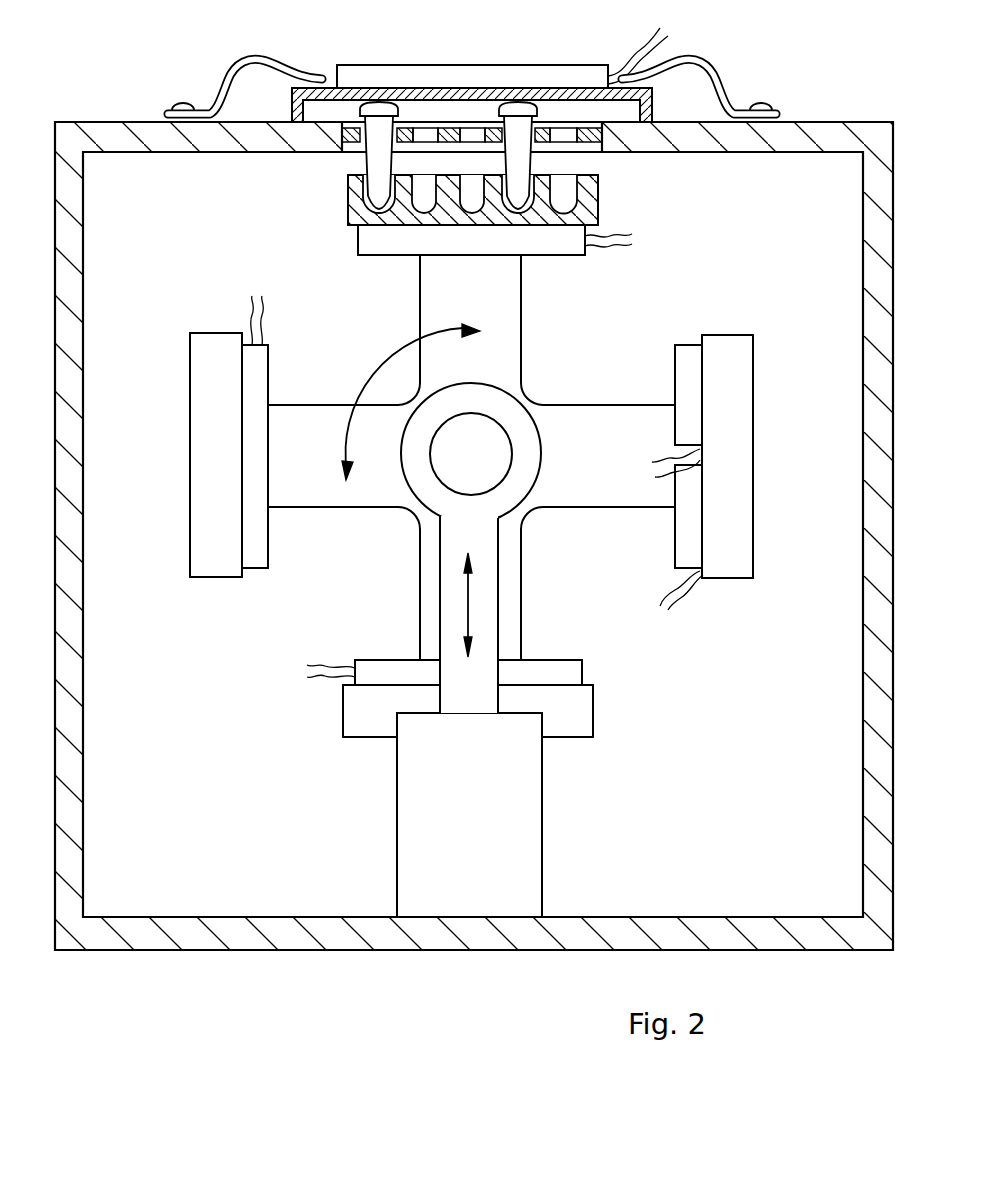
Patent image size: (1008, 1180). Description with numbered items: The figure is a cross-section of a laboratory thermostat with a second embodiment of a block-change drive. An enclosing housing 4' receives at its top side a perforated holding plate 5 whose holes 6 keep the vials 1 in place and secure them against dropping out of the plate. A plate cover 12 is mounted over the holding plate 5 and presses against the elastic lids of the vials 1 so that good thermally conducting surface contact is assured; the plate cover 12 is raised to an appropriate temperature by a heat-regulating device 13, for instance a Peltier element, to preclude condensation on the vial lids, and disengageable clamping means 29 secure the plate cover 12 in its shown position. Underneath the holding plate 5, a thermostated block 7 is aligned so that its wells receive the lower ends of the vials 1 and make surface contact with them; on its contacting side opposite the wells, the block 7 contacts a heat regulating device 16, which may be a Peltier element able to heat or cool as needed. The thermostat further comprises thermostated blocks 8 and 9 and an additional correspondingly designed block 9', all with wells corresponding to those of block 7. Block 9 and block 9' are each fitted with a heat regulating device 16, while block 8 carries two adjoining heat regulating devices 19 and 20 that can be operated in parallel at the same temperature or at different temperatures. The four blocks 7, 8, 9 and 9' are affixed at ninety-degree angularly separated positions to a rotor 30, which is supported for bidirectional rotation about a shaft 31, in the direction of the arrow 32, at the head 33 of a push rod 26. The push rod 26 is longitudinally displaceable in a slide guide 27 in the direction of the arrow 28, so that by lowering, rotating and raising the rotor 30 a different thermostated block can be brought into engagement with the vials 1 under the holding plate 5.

The vials 1 is at (373, 162).
The housing 4' is at (474, 536).
The holding plate 5 is at (445, 128).
The holes 6 is at (562, 127).
The thermostated block 7 is at (585, 207).
The thermostated block 8 is at (722, 350).
The thermostated block 9 is at (507, 711).
The thermostated block 9' is at (257, 470).
The plate cover 12 is at (498, 86).
The heat-regulating device 13 is at (383, 73).
The heat regulating device 16 is at (380, 240).
The heat regulating device 19 is at (677, 372).
The heat regulating device 20 is at (688, 536).
The push rod 26 is at (483, 632).
The slide guide 27 is at (525, 808).
The arrow 28 is at (468, 593).
The clamping means 29 is at (218, 90).
The rotor 30 is at (568, 490).
The shaft 31 is at (492, 450).
The arrow 32 is at (400, 350).
The head 33 is at (533, 448).